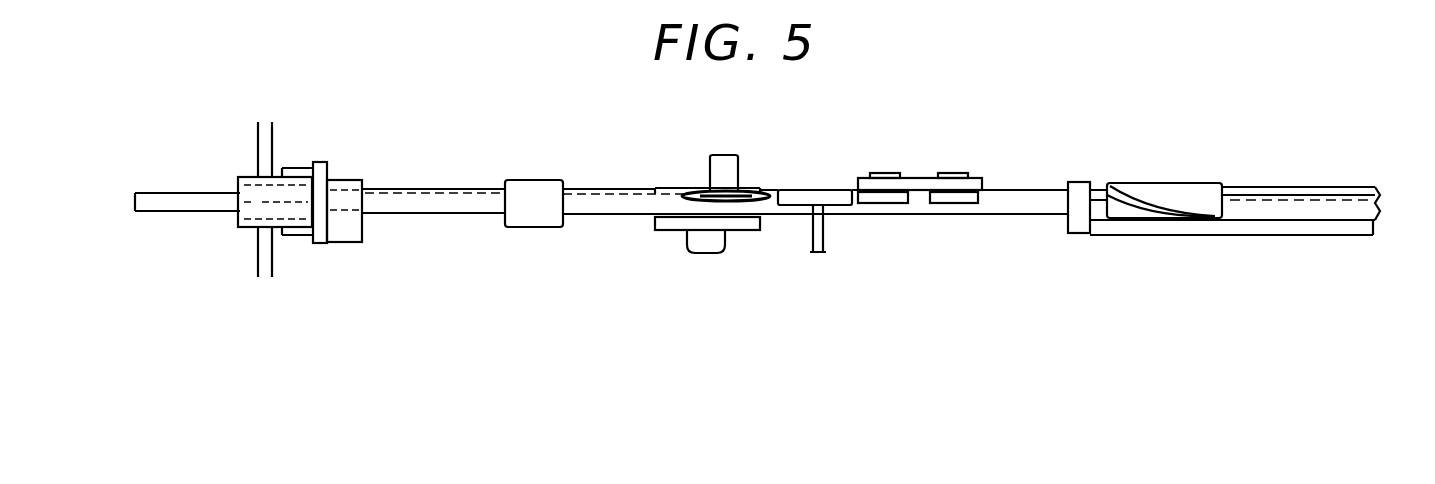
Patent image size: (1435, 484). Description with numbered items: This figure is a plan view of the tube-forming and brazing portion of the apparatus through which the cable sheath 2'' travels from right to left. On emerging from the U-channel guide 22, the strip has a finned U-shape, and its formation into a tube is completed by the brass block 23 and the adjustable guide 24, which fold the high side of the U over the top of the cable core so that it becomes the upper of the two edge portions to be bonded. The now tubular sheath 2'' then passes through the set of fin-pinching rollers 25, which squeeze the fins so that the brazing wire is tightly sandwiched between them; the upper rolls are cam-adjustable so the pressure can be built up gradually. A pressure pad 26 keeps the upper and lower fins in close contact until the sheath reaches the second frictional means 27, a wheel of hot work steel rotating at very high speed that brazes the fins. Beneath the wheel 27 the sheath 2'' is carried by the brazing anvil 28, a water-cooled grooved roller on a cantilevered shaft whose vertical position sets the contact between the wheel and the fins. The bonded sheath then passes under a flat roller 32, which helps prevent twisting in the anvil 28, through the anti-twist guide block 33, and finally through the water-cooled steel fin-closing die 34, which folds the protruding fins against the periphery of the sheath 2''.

The cable sheath 2'' is at (601, 154).
The fin-closing die 34 is at (238, 176).
The anti-twist guide block 33 is at (357, 178).
The flat roller 32 is at (540, 188).
The second frictional means 27 is at (727, 170).
The brazing anvil 28 is at (677, 231).
The pressure pad 26 is at (832, 190).
The fin-pinching rollers 25 is at (918, 182).
The adjustable guide 24 is at (1080, 188).
The brass block 23 is at (1190, 185).
The U-channel guide 22 is at (1357, 188).